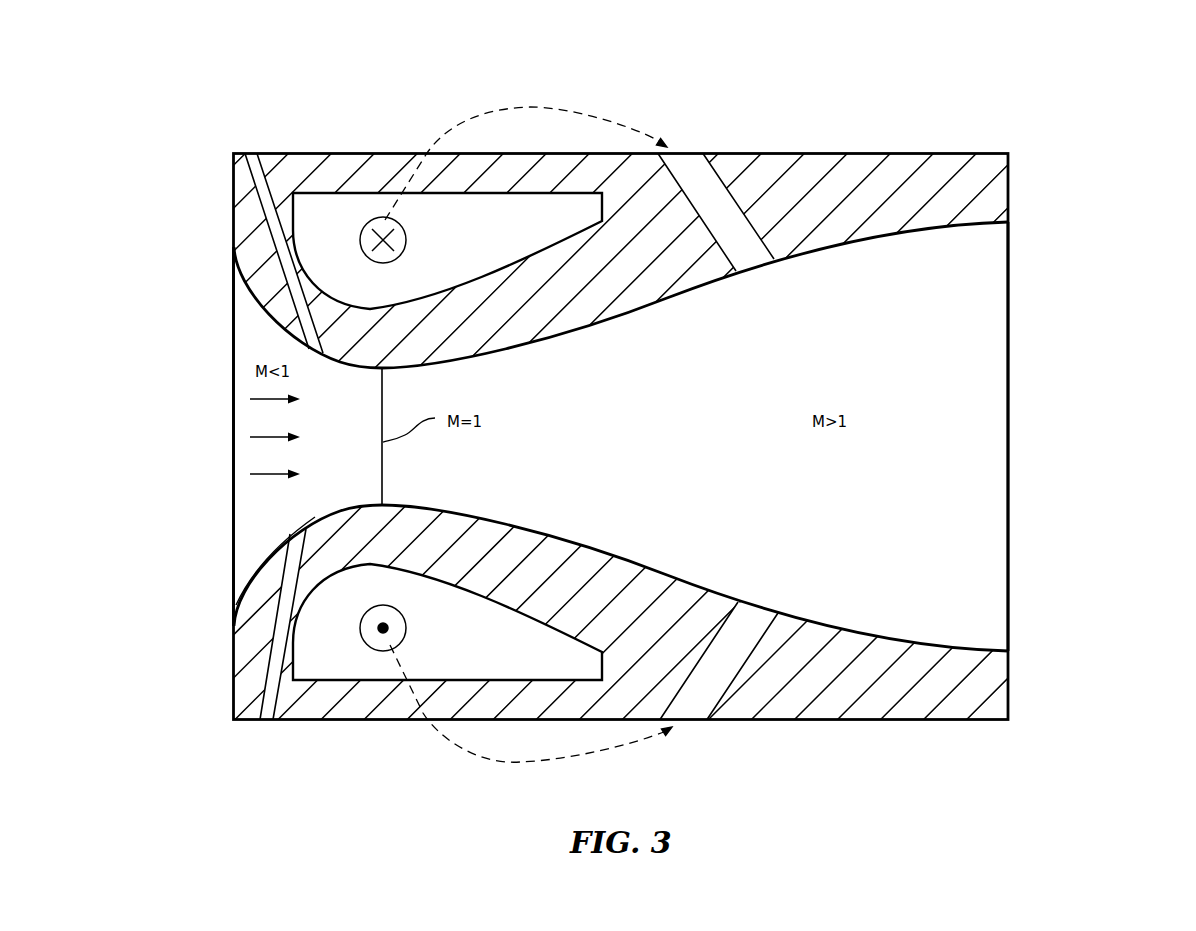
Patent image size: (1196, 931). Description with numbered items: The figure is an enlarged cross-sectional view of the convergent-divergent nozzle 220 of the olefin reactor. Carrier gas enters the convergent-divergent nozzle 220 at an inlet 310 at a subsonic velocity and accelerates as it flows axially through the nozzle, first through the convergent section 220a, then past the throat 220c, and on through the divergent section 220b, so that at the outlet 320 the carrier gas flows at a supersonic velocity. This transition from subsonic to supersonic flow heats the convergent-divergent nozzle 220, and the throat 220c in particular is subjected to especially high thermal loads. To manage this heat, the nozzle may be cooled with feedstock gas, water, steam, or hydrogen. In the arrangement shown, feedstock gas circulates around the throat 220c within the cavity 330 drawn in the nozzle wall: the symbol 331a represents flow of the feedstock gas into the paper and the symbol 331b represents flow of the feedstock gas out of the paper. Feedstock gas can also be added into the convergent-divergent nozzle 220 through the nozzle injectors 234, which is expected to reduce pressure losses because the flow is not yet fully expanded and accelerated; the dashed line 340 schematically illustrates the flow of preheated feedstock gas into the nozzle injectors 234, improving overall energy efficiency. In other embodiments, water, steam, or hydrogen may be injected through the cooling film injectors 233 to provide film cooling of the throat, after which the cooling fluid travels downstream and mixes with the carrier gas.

The convergent-divergent nozzle 220 is at (608, 421).
The convergent section 220a is at (255, 503).
The divergent section 220b is at (913, 550).
The throat 220c is at (232, 433).
The cooling film injectors 233 is at (250, 142).
The nozzle injectors 234 is at (688, 142).
The inlet 310 is at (215, 463).
The outlet 320 is at (1009, 437).
The cavity 330 is at (332, 662).
The flow of the feedstock gas in the direction of the paper 331a is at (407, 241).
The flow of the feedstock gas out of the paper 331b is at (407, 632).
The dashed line 340 is at (520, 107).